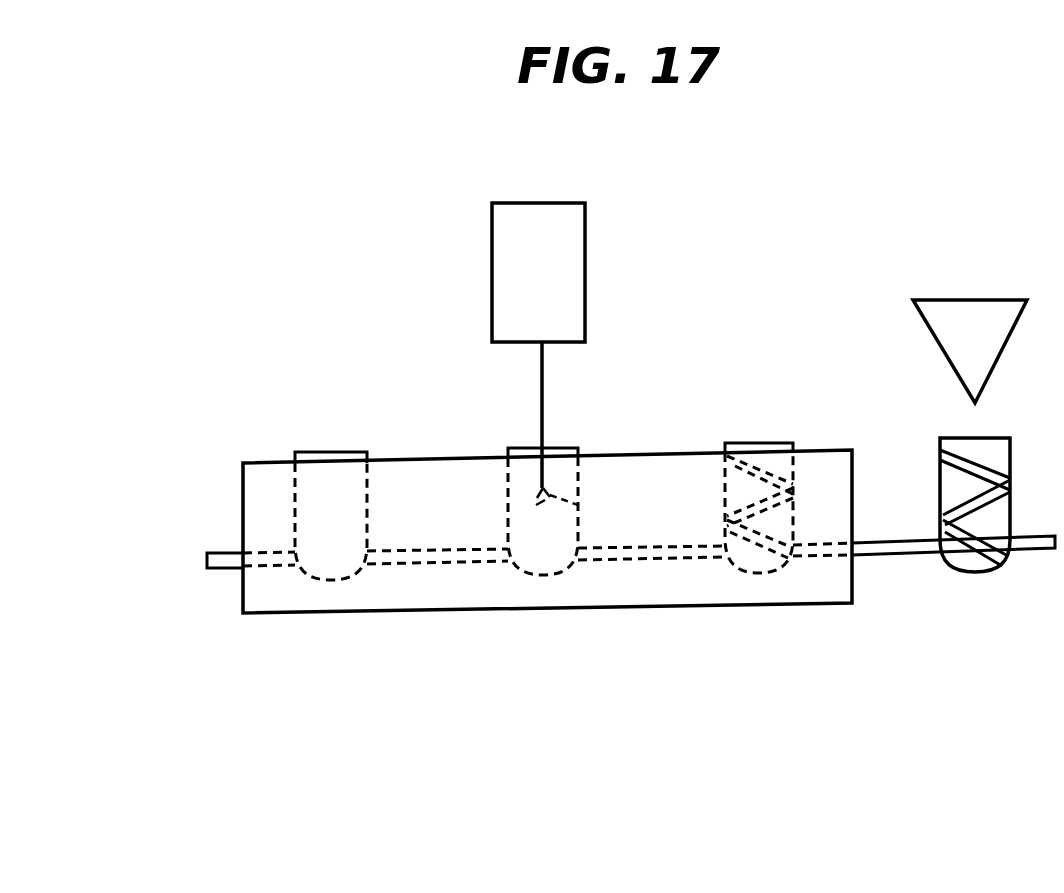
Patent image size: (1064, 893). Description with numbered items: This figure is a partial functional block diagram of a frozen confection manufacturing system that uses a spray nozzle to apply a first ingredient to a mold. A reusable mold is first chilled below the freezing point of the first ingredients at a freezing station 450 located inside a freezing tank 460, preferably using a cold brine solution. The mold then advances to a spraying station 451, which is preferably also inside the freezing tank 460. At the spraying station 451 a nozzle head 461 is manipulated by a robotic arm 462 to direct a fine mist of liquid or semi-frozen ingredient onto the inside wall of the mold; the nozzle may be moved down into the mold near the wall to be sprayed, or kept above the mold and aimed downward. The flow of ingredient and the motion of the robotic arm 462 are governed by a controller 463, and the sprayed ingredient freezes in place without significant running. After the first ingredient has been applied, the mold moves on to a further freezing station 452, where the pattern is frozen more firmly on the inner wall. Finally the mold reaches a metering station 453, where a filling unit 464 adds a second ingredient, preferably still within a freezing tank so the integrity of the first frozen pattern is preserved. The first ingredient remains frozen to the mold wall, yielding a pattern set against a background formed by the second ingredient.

The freezing station 450 is at (333, 621).
The spraying station 451 is at (545, 621).
The freezing station 452 is at (758, 621).
The metering station 453 is at (977, 623).
The freezing tank 460 is at (243, 512).
The nozzle head 461 is at (583, 508).
The robotic arm 462 is at (540, 410).
The controller 463 is at (566, 295).
The filling unit 464 is at (962, 342).